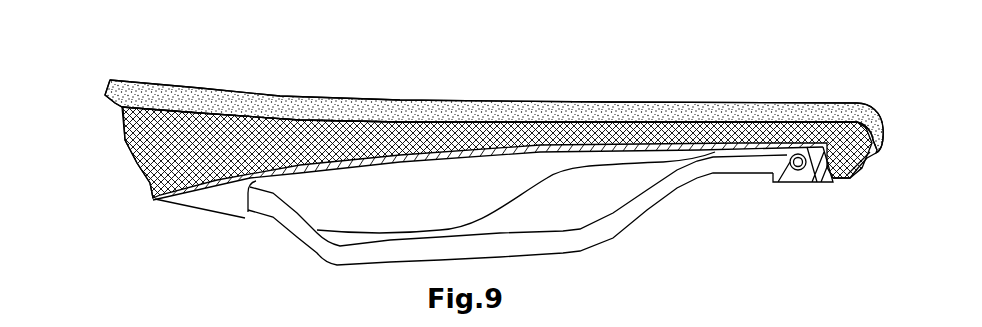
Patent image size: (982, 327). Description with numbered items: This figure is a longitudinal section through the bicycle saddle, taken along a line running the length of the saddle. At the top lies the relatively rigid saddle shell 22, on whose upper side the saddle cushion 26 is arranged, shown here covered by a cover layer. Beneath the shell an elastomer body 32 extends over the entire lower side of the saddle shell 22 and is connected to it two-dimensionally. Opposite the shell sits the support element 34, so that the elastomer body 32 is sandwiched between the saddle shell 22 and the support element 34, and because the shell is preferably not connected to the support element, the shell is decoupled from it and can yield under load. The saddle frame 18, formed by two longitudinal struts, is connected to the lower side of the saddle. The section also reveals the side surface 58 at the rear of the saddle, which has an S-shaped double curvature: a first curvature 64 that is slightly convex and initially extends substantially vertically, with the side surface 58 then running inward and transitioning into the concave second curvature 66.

The saddle frame 18 is at (617, 222).
The saddle shell 22 is at (395, 107).
The saddle cushion 26 is at (308, 117).
The elastomer body 32 is at (483, 127).
The support element 34 is at (555, 155).
The side surface 58 is at (101, 156).
The first curvature 64 is at (120, 137).
The second curvature 66 is at (147, 177).